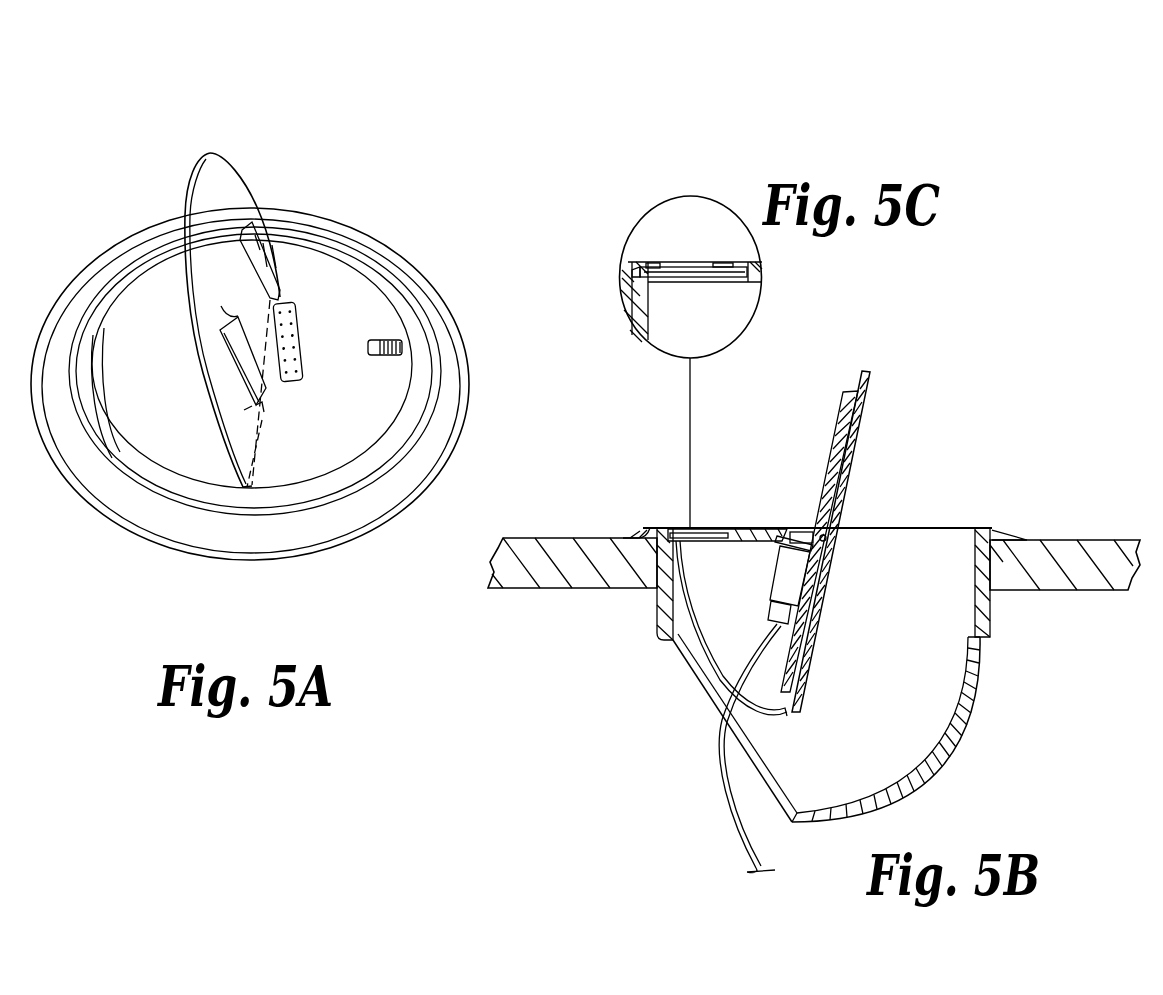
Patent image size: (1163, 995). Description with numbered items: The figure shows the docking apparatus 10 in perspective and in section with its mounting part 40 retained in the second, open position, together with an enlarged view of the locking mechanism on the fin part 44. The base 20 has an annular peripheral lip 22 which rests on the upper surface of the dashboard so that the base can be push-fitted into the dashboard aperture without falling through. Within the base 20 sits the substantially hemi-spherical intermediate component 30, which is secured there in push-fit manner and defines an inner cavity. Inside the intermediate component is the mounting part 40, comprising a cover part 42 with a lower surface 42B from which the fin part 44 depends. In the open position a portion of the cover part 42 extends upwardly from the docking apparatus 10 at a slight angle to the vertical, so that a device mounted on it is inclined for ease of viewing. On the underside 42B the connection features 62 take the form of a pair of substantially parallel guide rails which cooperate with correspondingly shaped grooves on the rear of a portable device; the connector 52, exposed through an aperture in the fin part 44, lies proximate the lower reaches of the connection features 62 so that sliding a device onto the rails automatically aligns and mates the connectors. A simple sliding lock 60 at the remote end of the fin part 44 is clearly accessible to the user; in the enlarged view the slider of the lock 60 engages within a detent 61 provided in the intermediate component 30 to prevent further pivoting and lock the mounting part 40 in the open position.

In FIG. 5A, the docking apparatus 10 is at (100, 232).
In FIG. 5A, the base 20 is at (75, 288).
In FIG. 5B, the base 20 is at (650, 520).
In FIG. 5A, the annular peripheral lip 22 is at (187, 530).
In FIG. 5B, the annular peripheral lip 22 is at (632, 537).
In FIG. 5A, the intermediate component 30 is at (133, 308).
In FIG. 5B, the intermediate component 30 is at (978, 527).
In FIG. 5C, the intermediate component 30 is at (640, 295).
In FIG. 5A, the mounting part 40 is at (190, 148).
In FIG. 5B, the mounting part 40 is at (865, 418).
In FIG. 5A, the cover part 42 is at (217, 188).
In FIG. 5B, the cover part 42 is at (868, 370).
In FIG. 5A, the lower surface of cover part 42B is at (232, 192).
In FIG. 5A, the fin part 44 is at (343, 430).
In FIG. 5B, the fin part 44 is at (772, 702).
In FIG. 5A, the connector 52 is at (293, 305).
In FIG. 5A, the sliding lock mechanism 60 is at (410, 368).
In FIG. 5B, the sliding lock mechanism 60 is at (683, 528).
In FIG. 5C, the sliding lock mechanism 60 is at (688, 267).
In FIG. 5C, the detent 61 is at (645, 263).
In FIG. 5A, the connection features 62 is at (265, 240).
In FIG. 5B, the connection features 62 is at (832, 432).